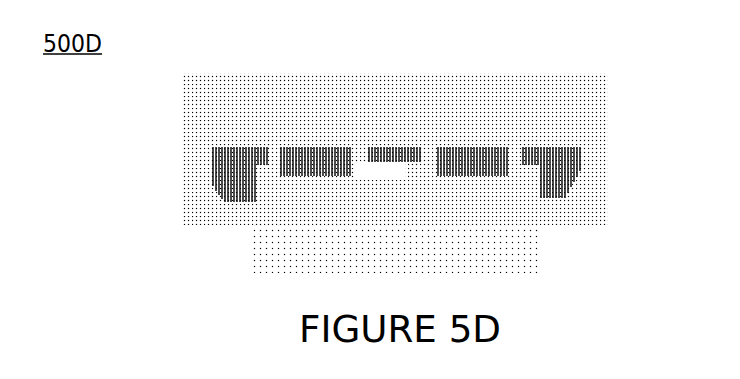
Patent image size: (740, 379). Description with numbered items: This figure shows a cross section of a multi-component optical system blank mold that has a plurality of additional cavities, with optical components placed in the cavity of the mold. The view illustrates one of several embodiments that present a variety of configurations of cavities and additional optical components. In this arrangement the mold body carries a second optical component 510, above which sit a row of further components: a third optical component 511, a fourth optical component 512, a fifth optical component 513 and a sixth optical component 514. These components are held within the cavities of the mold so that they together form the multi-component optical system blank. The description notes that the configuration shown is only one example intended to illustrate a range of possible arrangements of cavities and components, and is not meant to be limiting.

The second optical component 510 is at (401, 192).
The third optical component 511 is at (473, 178).
The fourth optical component 512 is at (390, 162).
The fifth optical component 513 is at (317, 147).
The sixth optical component 514 is at (228, 119).